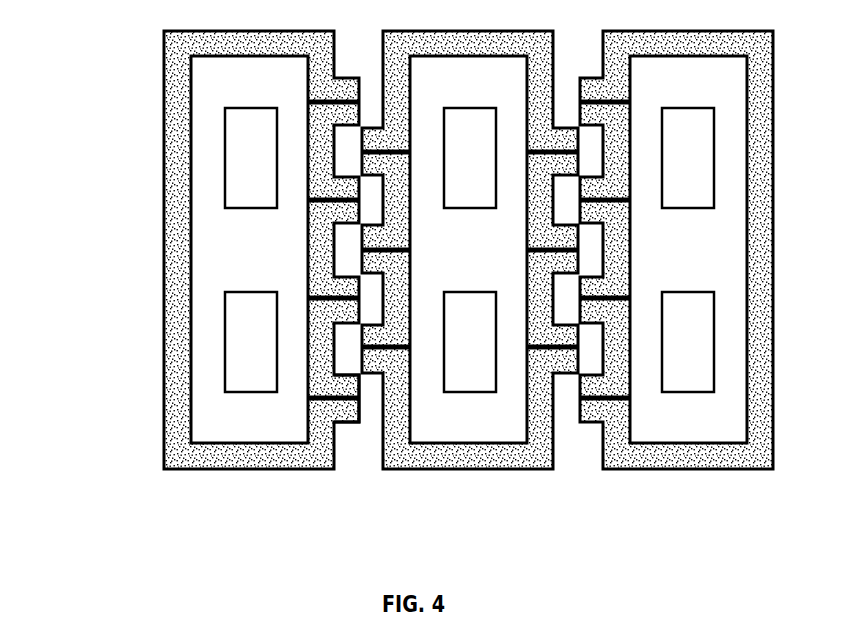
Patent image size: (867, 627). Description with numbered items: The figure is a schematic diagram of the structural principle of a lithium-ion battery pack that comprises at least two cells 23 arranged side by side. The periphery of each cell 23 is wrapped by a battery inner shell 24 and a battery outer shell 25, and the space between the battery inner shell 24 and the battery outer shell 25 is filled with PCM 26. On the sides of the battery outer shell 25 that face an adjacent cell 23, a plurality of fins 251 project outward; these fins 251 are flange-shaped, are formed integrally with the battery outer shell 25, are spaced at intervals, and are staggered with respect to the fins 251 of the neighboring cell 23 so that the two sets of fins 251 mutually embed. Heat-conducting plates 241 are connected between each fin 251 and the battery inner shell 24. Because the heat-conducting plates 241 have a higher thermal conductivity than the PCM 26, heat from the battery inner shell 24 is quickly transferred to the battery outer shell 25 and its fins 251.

The cell 23 is at (210, 158).
The battery inner shell 24 is at (188, 215).
The battery outer shell 25 is at (163, 287).
The PCM 26 is at (180, 250).
The heat-conducting plate 241 is at (316, 410).
The fin 251 is at (349, 428).